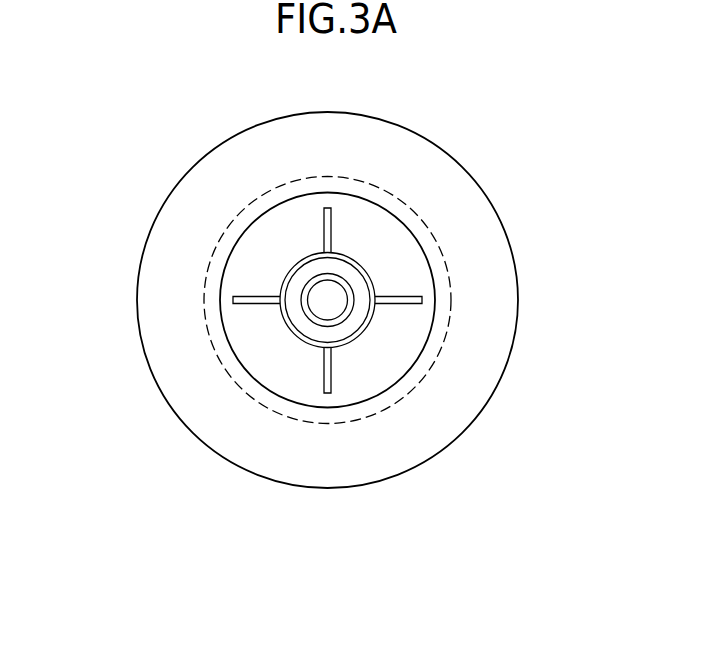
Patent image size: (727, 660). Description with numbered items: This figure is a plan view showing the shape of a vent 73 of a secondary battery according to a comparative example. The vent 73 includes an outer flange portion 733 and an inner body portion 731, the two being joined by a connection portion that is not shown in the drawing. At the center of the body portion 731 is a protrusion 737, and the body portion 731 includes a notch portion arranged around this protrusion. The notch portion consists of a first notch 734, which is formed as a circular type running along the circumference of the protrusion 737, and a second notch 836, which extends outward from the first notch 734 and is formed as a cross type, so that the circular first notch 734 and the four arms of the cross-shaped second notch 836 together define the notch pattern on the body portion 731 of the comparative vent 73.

The vent 73 is at (509, 161).
The flange portion 733 is at (178, 202).
The body portion 731 is at (383, 367).
The first notch 734 is at (297, 340).
The protrusion 737 is at (348, 312).
The second notch 836 is at (330, 380).